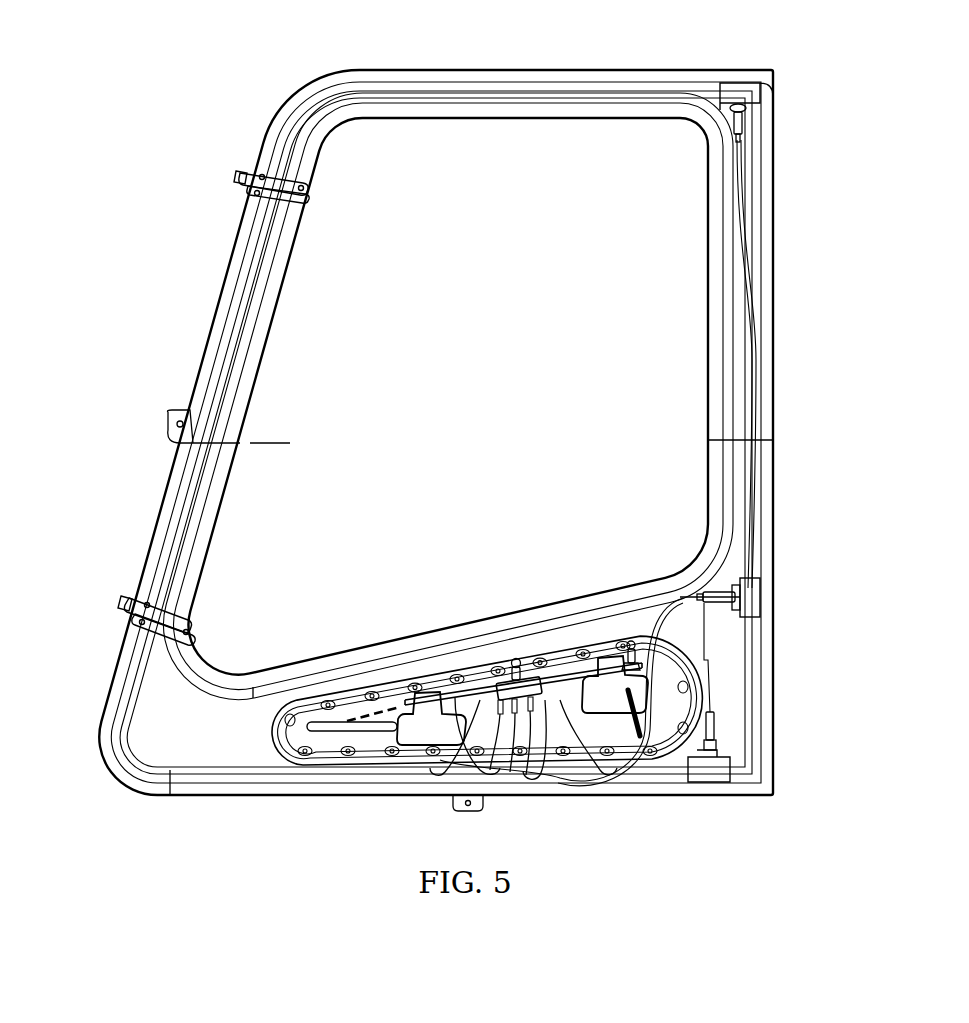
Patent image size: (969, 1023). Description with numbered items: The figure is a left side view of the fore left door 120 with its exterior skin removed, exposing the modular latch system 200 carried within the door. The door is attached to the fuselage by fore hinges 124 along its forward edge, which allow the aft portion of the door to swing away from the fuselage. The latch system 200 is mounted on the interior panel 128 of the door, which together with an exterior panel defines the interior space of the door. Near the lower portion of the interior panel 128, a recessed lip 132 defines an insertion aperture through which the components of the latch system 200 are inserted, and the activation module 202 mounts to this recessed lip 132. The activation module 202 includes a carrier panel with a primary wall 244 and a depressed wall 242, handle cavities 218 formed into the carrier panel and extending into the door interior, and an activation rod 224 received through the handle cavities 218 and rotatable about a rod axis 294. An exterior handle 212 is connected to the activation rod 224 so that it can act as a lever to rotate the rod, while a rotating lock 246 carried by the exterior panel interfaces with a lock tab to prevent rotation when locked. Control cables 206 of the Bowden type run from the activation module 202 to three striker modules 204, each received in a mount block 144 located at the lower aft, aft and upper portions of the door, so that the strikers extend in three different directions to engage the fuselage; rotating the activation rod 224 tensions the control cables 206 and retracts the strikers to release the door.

The fore left door 120 is at (589, 69).
The mount block 144 is at (732, 84).
The striker module 204 is at (756, 113).
The fore hinge 124 is at (240, 180).
The control cable 206 is at (755, 334).
The exterior handle 212 is at (631, 640).
The primary wall 244 is at (540, 652).
The modular latch system 200 is at (562, 646).
The rotating lock 246 is at (516, 657).
The rod axis 294 is at (394, 705).
The handle cavity 218 is at (430, 692).
The activation module 202 is at (474, 666).
The recessed lip 132 is at (311, 705).
The interior panel 128 is at (160, 700).
The depressed wall 242 is at (329, 742).
The activation rod 224 is at (465, 722).